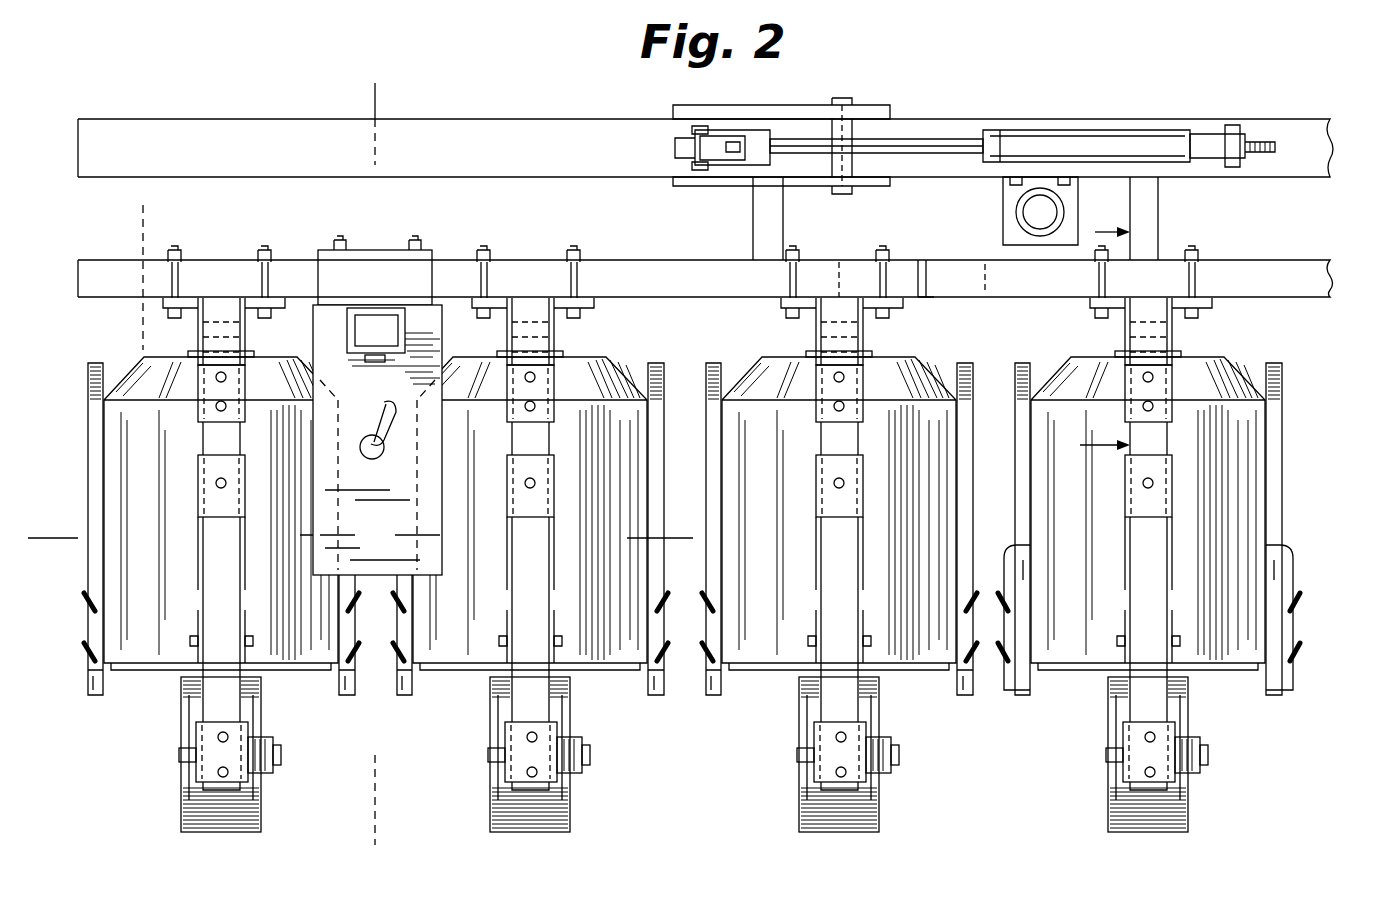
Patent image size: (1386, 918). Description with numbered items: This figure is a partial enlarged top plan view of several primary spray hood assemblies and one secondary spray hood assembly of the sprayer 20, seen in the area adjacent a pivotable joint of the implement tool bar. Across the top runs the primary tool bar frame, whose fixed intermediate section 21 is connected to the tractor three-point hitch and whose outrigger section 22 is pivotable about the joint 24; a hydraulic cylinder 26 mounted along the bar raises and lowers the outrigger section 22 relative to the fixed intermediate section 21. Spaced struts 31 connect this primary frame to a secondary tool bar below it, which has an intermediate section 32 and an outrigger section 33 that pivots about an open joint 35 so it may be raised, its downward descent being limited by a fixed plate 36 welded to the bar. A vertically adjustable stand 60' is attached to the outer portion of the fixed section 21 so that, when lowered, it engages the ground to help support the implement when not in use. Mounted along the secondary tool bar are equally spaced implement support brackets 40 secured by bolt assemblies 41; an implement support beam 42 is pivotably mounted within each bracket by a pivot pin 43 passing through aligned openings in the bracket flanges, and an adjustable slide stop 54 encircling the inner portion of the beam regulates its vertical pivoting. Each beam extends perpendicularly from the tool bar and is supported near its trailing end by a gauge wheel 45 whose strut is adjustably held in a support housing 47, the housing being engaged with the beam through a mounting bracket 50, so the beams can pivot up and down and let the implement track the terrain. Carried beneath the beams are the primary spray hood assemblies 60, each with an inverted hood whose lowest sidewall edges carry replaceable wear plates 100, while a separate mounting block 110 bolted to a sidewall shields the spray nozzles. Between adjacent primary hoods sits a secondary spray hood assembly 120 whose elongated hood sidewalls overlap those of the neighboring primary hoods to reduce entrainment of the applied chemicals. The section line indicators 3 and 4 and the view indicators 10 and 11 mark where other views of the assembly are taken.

The section line 3- 3 is at (366, 100).
The section line 4- 4 is at (40, 550).
The cultivating apparatus 10 is at (132, 223).
The direction of travel 11 is at (1087, 336).
The sprayer 20 is at (786, 96).
The fixed intermediate section 21 is at (1182, 92).
The outrigger section 22 is at (452, 92).
The joint 24 is at (842, 100).
The hydraulic cylinder 26 is at (987, 140).
The strut 31 is at (753, 222).
The intermediate section of secondary tool bar 32 is at (1274, 260).
The outrigger section of secondary tool bar 33 is at (650, 238).
The open joint 35 is at (914, 298).
The fixed plate 36 is at (854, 270).
The implement support bracket 40 is at (247, 510).
The bolt assembly 41 is at (224, 254).
The implement support beam 42 is at (494, 754).
The pivot pin 43 is at (502, 331).
The gauge wheel 45 is at (879, 754).
The support housing 47 is at (290, 748).
The mounting bracket 50 is at (183, 757).
The adjustable slide stop 54 is at (534, 499).
The primary spray hood assembly 60 is at (690, 508).
The vertically adjustable stand 60' is at (1006, 211).
The wear plate 100 is at (669, 557).
The mounting block 110 is at (1317, 529).
The secondary spray hood assembly 120 is at (424, 322).